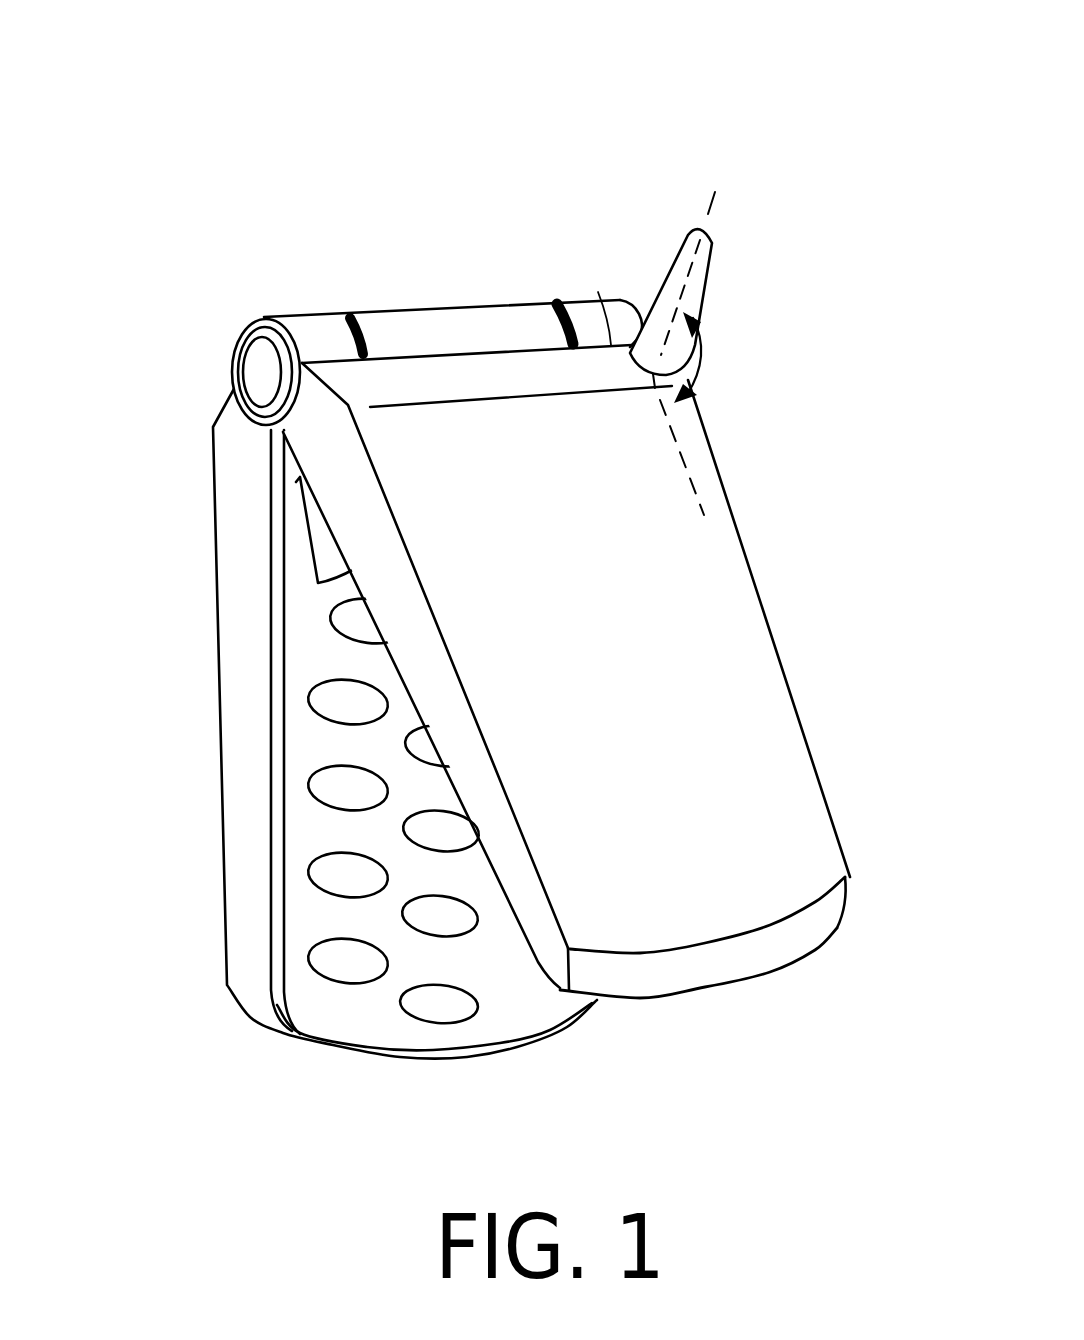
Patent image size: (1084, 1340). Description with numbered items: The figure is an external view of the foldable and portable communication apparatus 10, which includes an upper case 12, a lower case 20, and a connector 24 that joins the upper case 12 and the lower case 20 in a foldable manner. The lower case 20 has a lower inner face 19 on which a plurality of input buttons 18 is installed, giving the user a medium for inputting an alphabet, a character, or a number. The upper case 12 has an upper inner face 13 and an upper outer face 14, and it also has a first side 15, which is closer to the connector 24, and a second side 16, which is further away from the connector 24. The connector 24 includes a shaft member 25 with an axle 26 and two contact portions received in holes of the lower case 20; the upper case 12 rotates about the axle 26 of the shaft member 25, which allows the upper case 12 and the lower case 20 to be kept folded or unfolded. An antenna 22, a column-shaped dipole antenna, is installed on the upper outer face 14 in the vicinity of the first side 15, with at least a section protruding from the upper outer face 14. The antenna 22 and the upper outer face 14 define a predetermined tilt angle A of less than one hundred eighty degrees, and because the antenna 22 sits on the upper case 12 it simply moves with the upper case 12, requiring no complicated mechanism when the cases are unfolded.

The foldable and portable communication apparatus 10 is at (225, 106).
The upper case 12 is at (609, 738).
The upper inner face 13 is at (569, 952).
The upper outer face 14 is at (787, 710).
The first side 15 is at (437, 370).
The second side 16 is at (826, 916).
The input buttons 18 is at (323, 960).
The lower inner face 19 is at (420, 1037).
The lower case 20 is at (168, 648).
The antenna 22 is at (671, 268).
The connector 24 is at (383, 287).
The shaft member 25 is at (248, 330).
The axle 26 is at (341, 318).